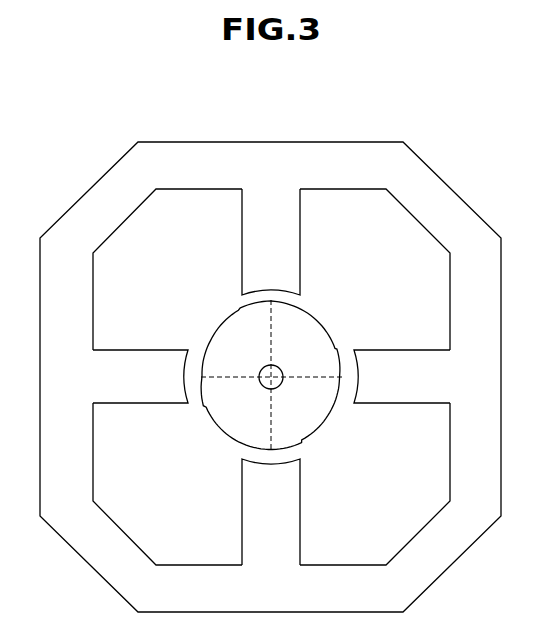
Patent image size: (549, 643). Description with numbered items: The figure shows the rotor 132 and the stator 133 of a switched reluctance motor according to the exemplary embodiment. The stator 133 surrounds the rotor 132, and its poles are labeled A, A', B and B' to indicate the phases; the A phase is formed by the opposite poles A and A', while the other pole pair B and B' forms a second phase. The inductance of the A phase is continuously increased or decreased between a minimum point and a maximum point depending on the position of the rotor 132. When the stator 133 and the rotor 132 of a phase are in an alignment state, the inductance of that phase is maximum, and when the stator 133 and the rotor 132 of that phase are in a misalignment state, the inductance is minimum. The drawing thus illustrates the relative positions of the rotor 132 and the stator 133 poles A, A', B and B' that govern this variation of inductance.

The rotor 132 is at (323, 332).
The stator 133 is at (268, 204).
The A phase A is at (271, 242).
The stator pole A' is at (271, 512).
The stator pole B is at (140, 376).
The stator pole B' is at (402, 376).